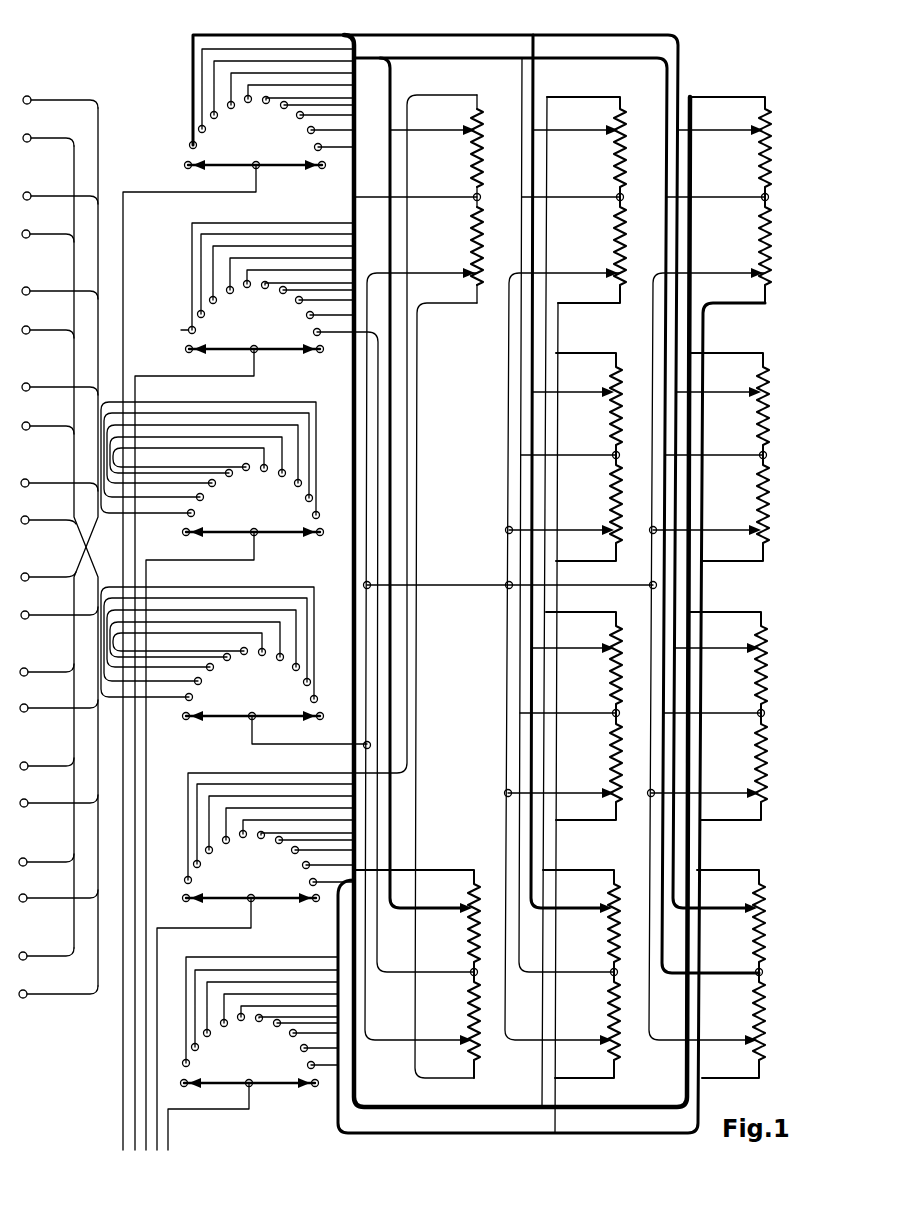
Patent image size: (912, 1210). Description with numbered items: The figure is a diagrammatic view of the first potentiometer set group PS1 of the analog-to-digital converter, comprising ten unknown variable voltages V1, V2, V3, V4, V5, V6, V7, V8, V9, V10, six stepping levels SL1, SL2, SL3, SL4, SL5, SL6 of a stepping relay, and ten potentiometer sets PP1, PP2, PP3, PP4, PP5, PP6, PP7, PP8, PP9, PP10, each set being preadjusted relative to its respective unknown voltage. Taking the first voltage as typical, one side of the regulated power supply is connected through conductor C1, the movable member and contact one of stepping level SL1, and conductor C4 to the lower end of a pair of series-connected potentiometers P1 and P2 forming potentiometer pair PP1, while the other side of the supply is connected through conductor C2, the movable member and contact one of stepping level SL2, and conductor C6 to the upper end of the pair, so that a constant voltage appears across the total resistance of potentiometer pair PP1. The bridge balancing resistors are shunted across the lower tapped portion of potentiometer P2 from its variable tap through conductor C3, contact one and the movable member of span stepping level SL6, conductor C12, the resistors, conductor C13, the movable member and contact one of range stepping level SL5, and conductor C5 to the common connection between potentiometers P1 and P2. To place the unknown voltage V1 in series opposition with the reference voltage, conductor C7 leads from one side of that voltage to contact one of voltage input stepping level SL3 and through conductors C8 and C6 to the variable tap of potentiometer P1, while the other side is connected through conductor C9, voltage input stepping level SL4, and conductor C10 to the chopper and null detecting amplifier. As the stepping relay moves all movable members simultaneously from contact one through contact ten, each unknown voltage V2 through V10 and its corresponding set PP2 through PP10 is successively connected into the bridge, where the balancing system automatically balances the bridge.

The variable voltage V1 is at (55, 121).
The unknown voltage V2 is at (55, 217).
The unknown voltage V3 is at (55, 312).
The unknown voltage V4 is at (55, 408).
The unknown voltage V5 is at (55, 501).
The unknown voltage V6 is at (55, 595).
The unknown voltage V7 is at (55, 688).
The unknown voltage V8 is at (55, 782).
The unknown voltage V9 is at (55, 878).
The unknown voltage V10 is at (54, 973).
The conductor C1 is at (169, 1136).
The conductor C2 is at (197, 928).
The conductor C3 is at (261, 35).
The conductor C4 is at (196, 957).
The conductor C5 is at (261, 223).
The conductor C6 is at (191, 773).
The conductor C7 is at (50, 138).
The conductor C8 is at (307, 744).
The conductor C9 is at (50, 100).
The conductor C10 is at (197, 558).
The conductor C12 is at (125, 217).
The conductor C13 is at (197, 376).
The potentiometer P1 is at (474, 262).
The potentiometer P2 is at (474, 118).
The potentiometer pair PP1 is at (457, 186).
The potentiometer set PP2 is at (598, 184).
The potentiometer set PP3 is at (741, 182).
The potentiometer set PP4 is at (597, 444).
The potentiometer set PP5 is at (740, 444).
The potentiometer set PP6 is at (596, 698).
The potentiometer set PP7 is at (739, 698).
The potentiometer set PP8 is at (450, 957).
The potentiometer set PP9 is at (595, 957).
The potentiometer set PP10 is at (747, 957).
The potentiometer set group PS1 is at (466, 537).
The stepping level SL1 is at (258, 1068).
The stepping level SL2 is at (258, 881).
The voltage input stepping level SL3 is at (260, 685).
The voltage input stepping level SL4 is at (257, 500).
The range stepping level SL5 is at (270, 316).
The span stepping level SL6 is at (262, 141).